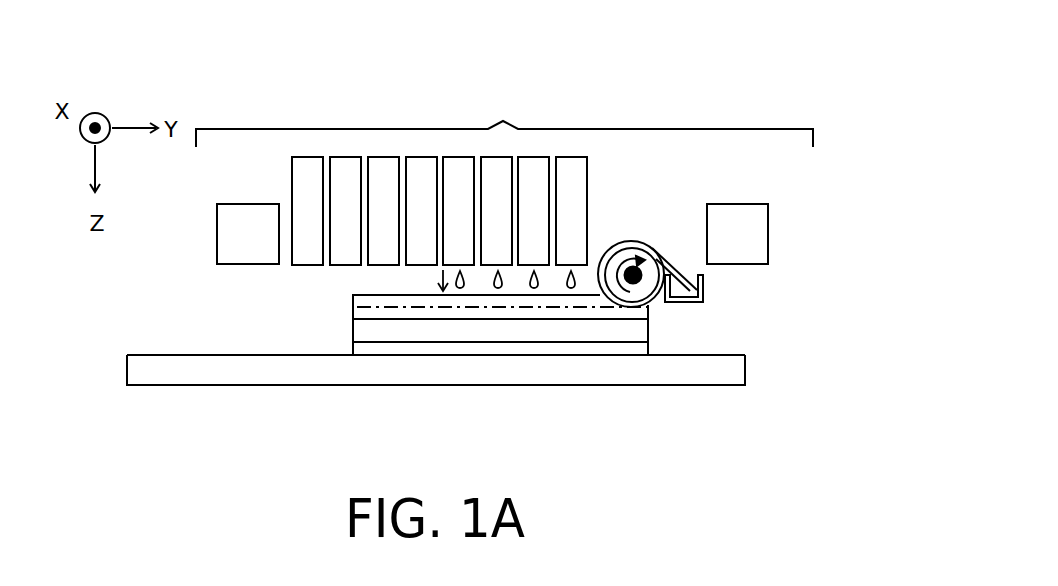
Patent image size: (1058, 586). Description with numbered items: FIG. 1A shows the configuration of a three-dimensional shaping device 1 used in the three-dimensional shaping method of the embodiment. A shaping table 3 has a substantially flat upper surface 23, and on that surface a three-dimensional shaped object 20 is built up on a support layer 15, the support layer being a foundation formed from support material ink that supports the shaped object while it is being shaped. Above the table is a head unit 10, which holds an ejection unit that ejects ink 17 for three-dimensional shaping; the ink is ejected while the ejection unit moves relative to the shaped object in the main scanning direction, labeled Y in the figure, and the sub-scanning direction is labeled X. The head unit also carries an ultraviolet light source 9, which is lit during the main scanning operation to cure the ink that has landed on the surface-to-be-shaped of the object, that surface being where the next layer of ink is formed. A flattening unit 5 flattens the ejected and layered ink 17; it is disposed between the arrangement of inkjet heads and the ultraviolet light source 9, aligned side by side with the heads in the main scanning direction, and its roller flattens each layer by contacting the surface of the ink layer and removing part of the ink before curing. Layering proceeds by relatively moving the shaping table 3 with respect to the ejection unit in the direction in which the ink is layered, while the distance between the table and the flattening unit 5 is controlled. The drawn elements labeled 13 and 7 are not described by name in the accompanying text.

The three-dimensional shaping device 1 is at (660, 74).
The head unit 10 is at (504, 215).
The ultraviolet light source 9 is at (262, 215).
The ink jet heads 13 is at (308, 260).
The ink 17 is at (586, 258).
The flattening unit 5 is at (654, 216).
The tray 7 is at (703, 283).
The shaping table 3 is at (265, 370).
The upper surface 23 is at (168, 354).
The support layer 15 is at (403, 350).
The three-dimensional shaped object 20 is at (530, 330).